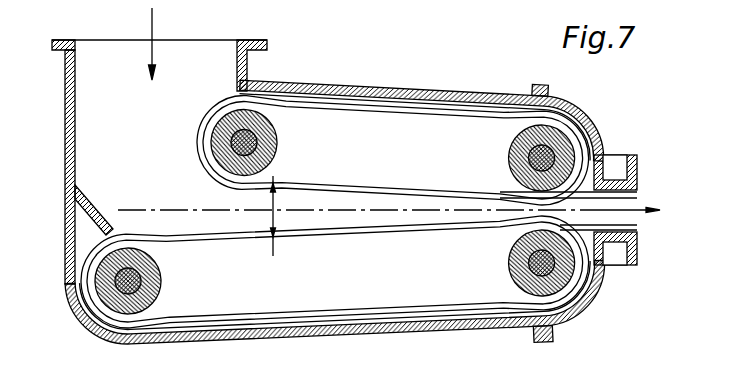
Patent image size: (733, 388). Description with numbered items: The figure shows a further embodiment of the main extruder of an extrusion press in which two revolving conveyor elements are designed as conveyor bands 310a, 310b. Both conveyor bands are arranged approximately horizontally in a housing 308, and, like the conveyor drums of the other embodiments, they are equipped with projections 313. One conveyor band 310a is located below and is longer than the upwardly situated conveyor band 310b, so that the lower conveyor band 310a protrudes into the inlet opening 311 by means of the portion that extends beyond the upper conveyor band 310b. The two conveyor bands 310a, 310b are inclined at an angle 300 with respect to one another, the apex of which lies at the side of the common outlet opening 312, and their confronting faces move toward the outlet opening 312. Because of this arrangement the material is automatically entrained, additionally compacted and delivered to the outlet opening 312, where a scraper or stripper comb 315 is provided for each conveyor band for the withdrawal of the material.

The angle 300 is at (270, 204).
The housing 308 is at (76, 128).
The lower conveyor band 310a is at (319, 315).
The upper conveyor band 310b is at (368, 109).
The inlet opening 311 is at (112, 53).
The outlet opening 312 is at (613, 218).
The projections 313 is at (134, 235).
The stripper comb 315 is at (197, 152).